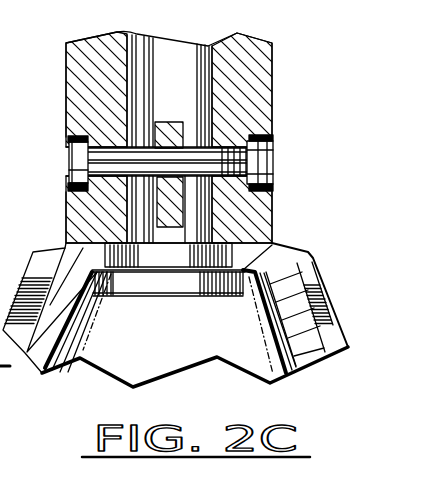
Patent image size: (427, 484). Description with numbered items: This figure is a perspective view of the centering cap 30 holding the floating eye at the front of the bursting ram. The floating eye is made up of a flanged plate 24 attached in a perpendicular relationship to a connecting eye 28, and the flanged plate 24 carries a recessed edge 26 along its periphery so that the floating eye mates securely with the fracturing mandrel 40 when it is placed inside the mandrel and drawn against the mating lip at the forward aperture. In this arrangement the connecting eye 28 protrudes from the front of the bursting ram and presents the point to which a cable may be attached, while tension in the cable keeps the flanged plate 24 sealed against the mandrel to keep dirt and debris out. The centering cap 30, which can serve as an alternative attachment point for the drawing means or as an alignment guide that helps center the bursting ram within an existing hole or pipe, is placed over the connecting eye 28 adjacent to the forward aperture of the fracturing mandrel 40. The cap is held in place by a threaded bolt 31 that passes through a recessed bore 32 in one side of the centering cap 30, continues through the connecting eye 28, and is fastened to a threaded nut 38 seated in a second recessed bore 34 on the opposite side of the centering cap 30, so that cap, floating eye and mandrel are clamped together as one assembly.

The flanged plate 24 is at (160, 287).
The recessed edge 26 is at (200, 263).
The connecting eye 28 is at (173, 127).
The centering cap 30 is at (96, 55).
The threaded bolt 31 is at (66, 182).
The recessed bore 32 is at (68, 189).
The recessed bore 34 is at (273, 188).
The threaded nut 38 is at (273, 143).
The fracturing mandrel 40 is at (282, 291).